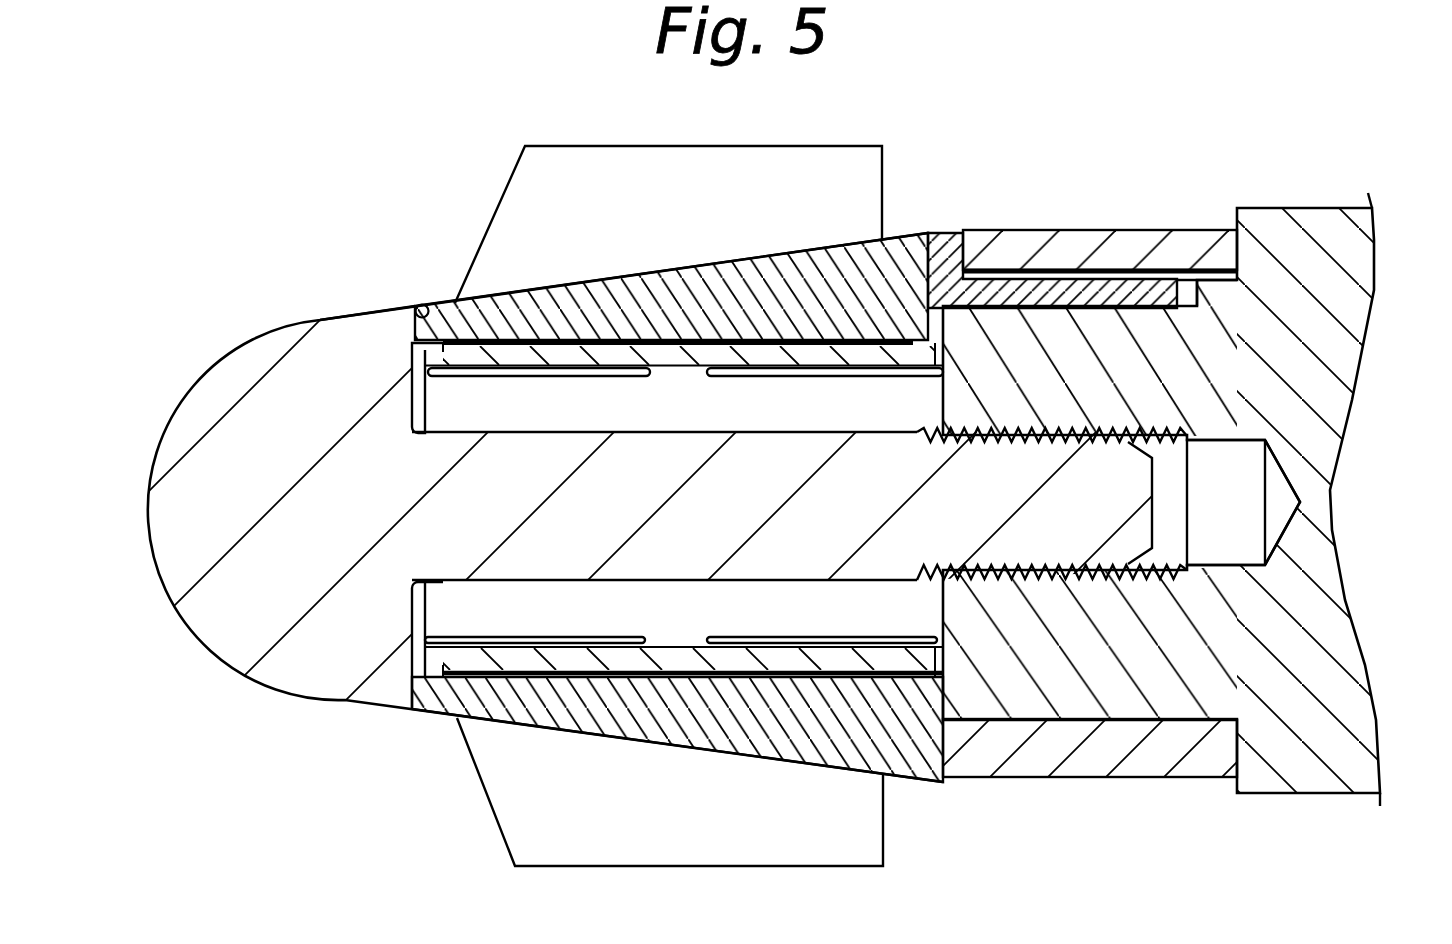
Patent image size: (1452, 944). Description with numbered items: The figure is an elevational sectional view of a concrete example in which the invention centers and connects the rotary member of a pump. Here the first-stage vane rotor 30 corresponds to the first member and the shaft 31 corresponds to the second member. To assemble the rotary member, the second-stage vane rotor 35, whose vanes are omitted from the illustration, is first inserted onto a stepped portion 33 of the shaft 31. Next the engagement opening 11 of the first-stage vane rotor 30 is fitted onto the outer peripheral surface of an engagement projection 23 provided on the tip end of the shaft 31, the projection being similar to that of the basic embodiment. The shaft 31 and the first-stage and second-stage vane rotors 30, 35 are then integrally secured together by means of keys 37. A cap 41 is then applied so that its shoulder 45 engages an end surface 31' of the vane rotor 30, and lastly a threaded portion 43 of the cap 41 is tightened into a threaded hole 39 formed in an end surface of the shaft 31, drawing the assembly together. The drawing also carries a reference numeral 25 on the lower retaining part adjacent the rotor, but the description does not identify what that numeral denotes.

The engagement opening 11 is at (462, 356).
The engagement projection 23 is at (433, 610).
The retaining ring 25 is at (433, 670).
The first-stage vane rotor 30 is at (488, 290).
The shaft 31 is at (1195, 499).
The end surface 31' is at (340, 297).
The stepped portion 33 is at (1207, 278).
The second-stage vane rotor 35 is at (1107, 220).
The keys 37 is at (1033, 290).
The threaded hole 39 is at (1253, 488).
The cap 41 is at (306, 320).
The threaded portion 43 is at (1047, 547).
The shoulder 45 is at (416, 305).